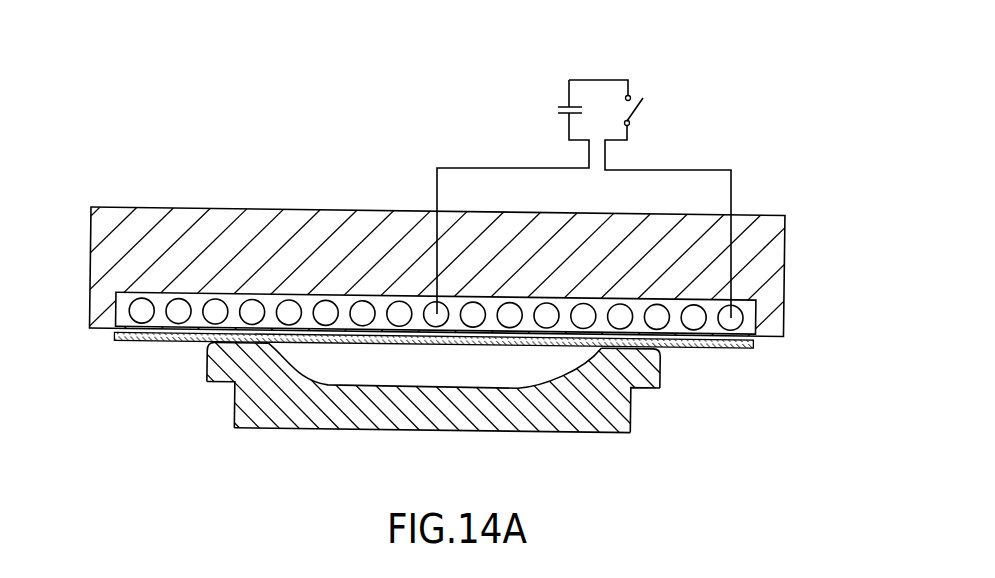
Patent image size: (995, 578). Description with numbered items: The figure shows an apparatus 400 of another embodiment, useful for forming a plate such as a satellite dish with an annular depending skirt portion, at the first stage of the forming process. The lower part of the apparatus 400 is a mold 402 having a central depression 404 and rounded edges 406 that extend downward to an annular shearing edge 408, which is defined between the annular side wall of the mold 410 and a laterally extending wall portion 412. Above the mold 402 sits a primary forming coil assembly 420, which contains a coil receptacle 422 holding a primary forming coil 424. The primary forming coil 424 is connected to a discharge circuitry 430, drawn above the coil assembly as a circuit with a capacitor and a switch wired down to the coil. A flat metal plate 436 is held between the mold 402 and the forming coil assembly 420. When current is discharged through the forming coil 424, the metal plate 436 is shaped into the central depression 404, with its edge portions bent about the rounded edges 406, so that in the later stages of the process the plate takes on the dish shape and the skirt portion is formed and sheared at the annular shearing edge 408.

The apparatus 400 is at (411, 422).
The mold 402 is at (277, 420).
The central depression 404 is at (525, 377).
The rounded edges 406 is at (657, 352).
The annular shearing edge 408 is at (652, 392).
The annular side wall 410 is at (208, 365).
The laterally extending wall portion 412 is at (222, 383).
The primary forming coil assembly 420 is at (190, 243).
The coil receptacle 422 is at (343, 302).
The primary forming coil 424 is at (289, 310).
The discharge circuitry 430 is at (686, 87).
The metal plate 436 is at (152, 341).